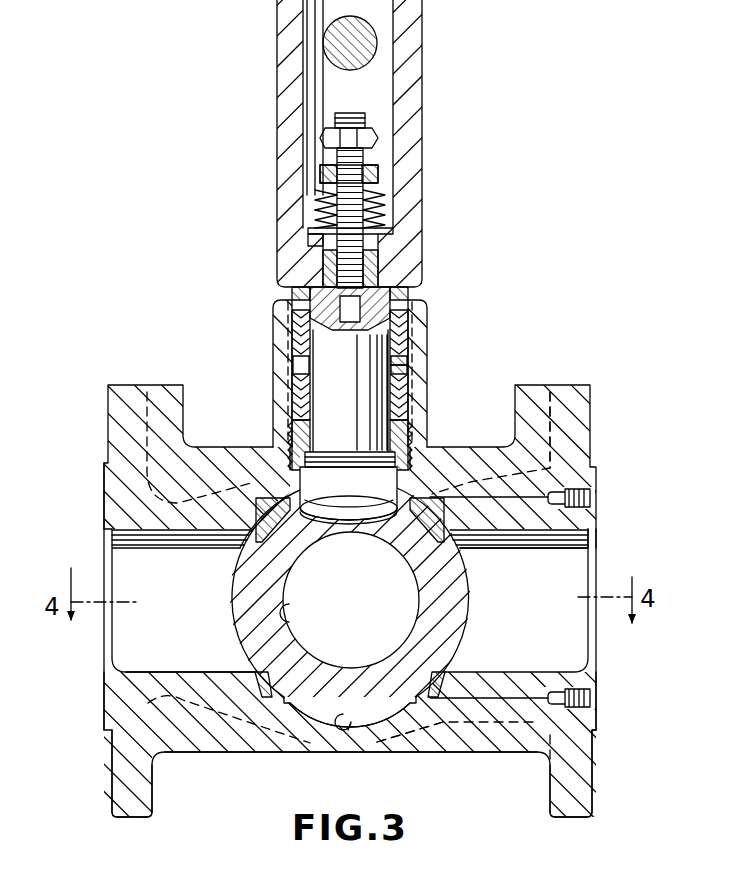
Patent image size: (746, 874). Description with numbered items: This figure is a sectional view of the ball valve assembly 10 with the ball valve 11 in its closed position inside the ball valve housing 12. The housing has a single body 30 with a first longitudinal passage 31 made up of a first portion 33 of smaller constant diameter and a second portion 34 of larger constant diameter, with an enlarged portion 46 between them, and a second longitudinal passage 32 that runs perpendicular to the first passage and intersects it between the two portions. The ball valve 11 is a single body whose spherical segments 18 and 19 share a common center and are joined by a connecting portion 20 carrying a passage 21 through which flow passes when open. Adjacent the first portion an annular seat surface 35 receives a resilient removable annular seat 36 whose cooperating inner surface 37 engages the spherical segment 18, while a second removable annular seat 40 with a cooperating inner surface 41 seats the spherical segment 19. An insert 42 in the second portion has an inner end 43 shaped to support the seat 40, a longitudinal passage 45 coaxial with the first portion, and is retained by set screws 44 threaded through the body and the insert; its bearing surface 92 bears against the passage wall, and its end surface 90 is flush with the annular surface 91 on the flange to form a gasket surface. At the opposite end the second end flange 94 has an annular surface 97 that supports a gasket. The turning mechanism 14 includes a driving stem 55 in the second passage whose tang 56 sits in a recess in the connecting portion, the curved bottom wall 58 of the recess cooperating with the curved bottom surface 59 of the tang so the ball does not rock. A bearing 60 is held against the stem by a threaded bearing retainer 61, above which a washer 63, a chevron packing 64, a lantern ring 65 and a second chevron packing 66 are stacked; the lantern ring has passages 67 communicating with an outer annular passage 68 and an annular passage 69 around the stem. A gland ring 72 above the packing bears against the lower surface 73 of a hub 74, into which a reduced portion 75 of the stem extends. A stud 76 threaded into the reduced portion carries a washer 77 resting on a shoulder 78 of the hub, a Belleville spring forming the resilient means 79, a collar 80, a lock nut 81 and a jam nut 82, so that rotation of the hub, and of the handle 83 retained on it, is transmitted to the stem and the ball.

The ball valve assembly 10 is at (582, 338).
The ball valve 11 is at (474, 605).
The ball valve housing 12 is at (505, 753).
The turning mechanism 14 is at (423, 99).
The spherical segment 18 is at (228, 596).
The spherical segment 19 is at (476, 563).
The connecting portion 20 is at (378, 697).
The passage 21 is at (288, 618).
The body 30 is at (220, 752).
The first longitudinal passage 31 is at (103, 549).
The second longitudinal passage 32 is at (304, 371).
The first portion 33 is at (106, 668).
The second portion 34 is at (522, 563).
The annular seat surface 35 is at (290, 488).
The removable annular seat 36 is at (255, 552).
The cooperating inner surface 37 is at (300, 530).
The second removable annular seat 40 is at (422, 685).
The cooperating inner surface 41 is at (418, 548).
The insert 42 is at (599, 677).
The inner end 43 is at (442, 662).
The set screws 44 is at (592, 498).
The longitudinal passage 45 is at (600, 542).
The enlarged portion 46 is at (345, 728).
The driving stem 55 is at (413, 349).
The tang 56 is at (352, 512).
The bottom wall 58 is at (397, 482).
The curved bottom surface 59 is at (357, 535).
The bearing 60 is at (408, 442).
The bearing retainer 61 is at (432, 430).
The washer 63 is at (406, 407).
The chevron packing 64 is at (292, 402).
The lantern ring 65 is at (291, 351).
The chevron packing 66 is at (409, 323).
The passages 67 is at (404, 366).
The outer annular passage 68 is at (406, 372).
The annular passage 69 is at (386, 371).
The gland ring 72 is at (409, 297).
The lower surface 73 is at (292, 292).
The hub 74 is at (275, 80).
The reduced portion 75 is at (382, 264).
The stud 76 is at (320, 240).
The washer 77 is at (394, 230).
The shoulder 78 is at (312, 222).
The resilient means 79 is at (316, 201).
The collar 80 is at (379, 174).
The lock nut 81 is at (378, 138).
The jam nut 82 is at (334, 122).
The handle 83 is at (376, 45).
The end surface 90 is at (598, 511).
The annular surface 91 is at (598, 484).
The bearing surface 92 is at (450, 700).
The second end flange 94 is at (120, 818).
The annular surface 97 is at (103, 493).